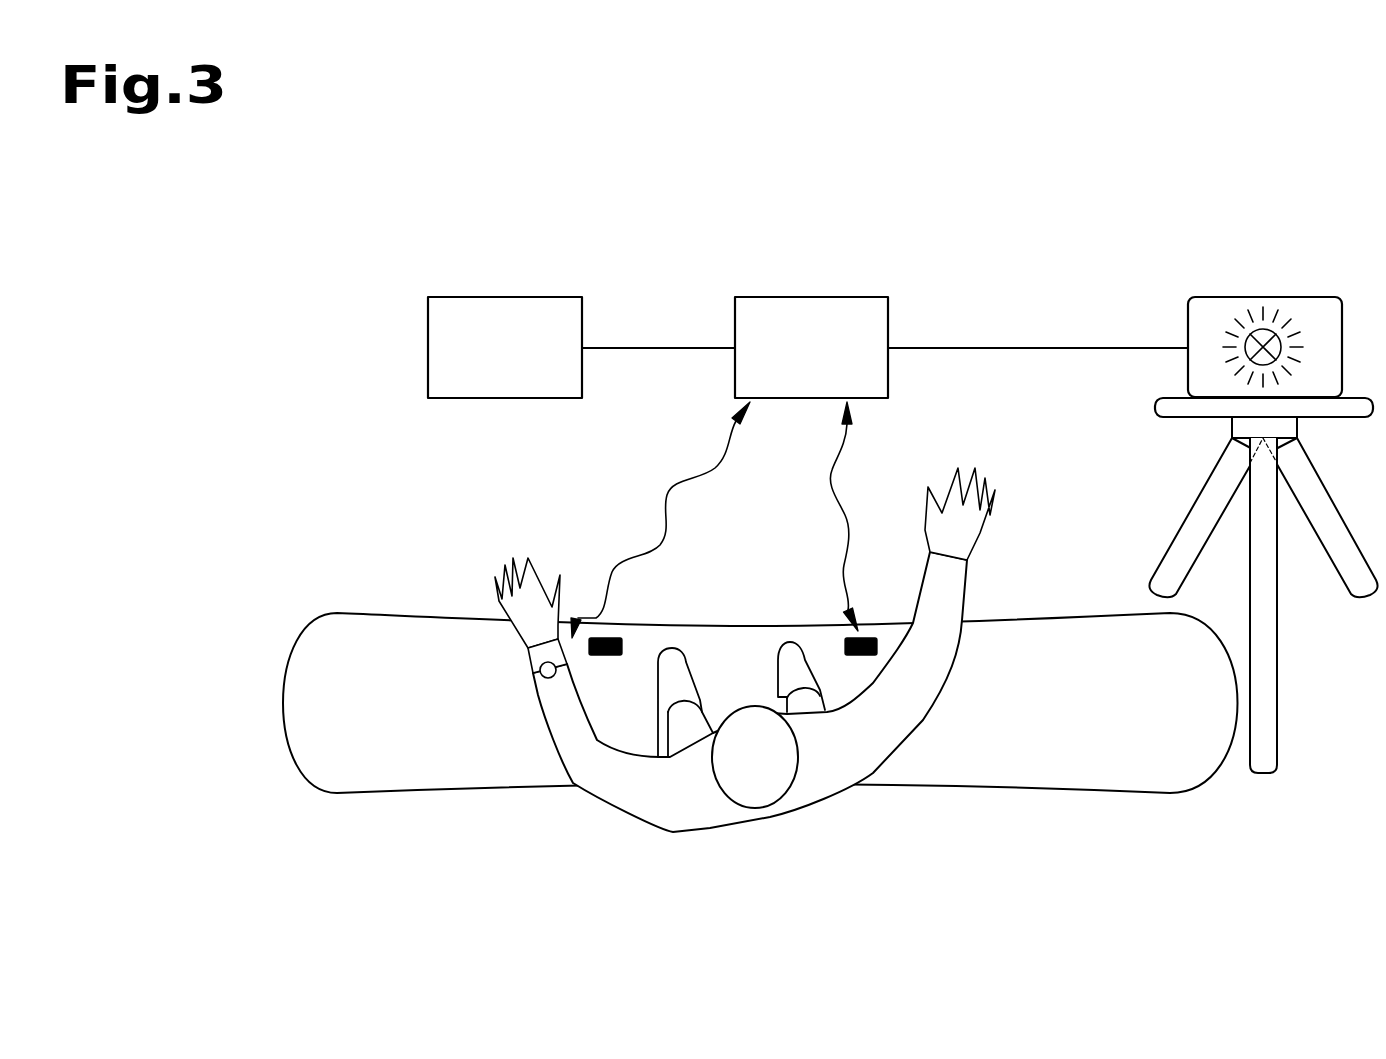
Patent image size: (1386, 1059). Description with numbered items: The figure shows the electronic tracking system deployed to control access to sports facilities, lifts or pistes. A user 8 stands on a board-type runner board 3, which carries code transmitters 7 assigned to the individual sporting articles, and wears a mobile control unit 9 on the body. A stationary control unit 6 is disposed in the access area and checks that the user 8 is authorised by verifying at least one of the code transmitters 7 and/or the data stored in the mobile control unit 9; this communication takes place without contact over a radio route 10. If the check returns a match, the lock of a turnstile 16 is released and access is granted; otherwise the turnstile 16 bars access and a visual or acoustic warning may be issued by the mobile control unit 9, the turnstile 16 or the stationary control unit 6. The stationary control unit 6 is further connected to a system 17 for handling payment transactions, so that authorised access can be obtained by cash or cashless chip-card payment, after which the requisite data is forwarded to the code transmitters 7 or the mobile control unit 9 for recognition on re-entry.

The board-type runner board 3 is at (1097, 768).
The stationary control unit 6 is at (868, 305).
The code transmitters 7 is at (622, 637).
The user 8 is at (693, 818).
The mobile control unit 9 is at (535, 682).
The radio route 10 is at (668, 491).
The turnstile 16 is at (1323, 307).
The system for handling payment transactions 17 is at (567, 305).